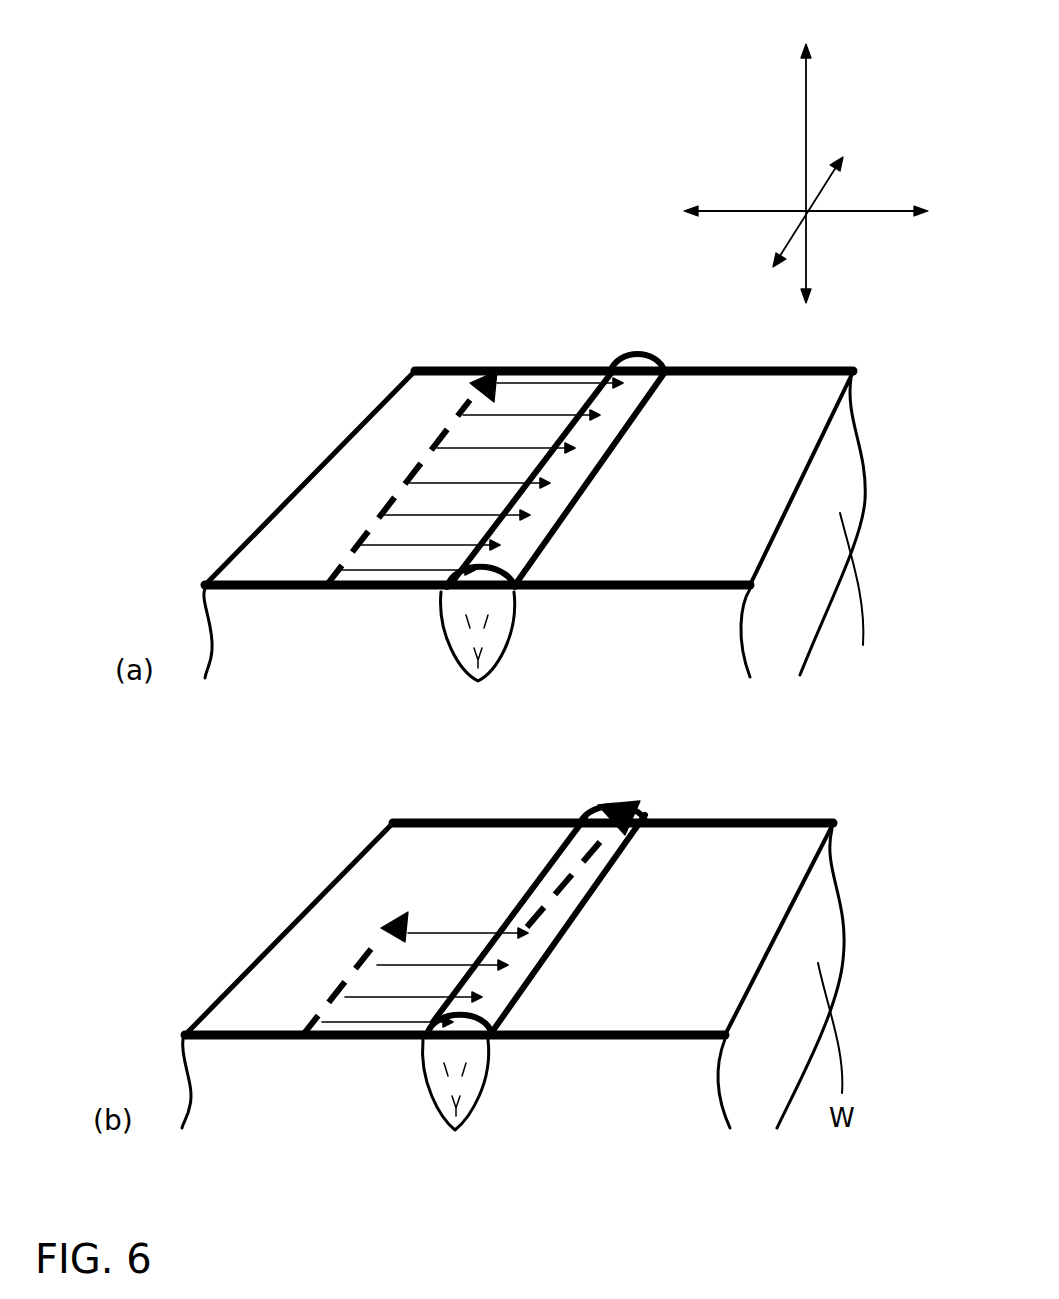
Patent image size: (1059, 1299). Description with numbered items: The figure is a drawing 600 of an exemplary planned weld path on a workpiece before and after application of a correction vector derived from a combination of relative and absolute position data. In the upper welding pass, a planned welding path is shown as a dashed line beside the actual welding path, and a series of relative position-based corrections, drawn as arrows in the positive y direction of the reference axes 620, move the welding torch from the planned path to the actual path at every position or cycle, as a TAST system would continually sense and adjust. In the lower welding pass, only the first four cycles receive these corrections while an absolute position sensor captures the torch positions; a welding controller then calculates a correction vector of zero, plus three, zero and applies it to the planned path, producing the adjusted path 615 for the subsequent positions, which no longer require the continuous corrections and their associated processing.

The drawing 600 is at (256, 66).
The adjusted path 615 is at (535, 915).
The reference axes 620 is at (737, 43).